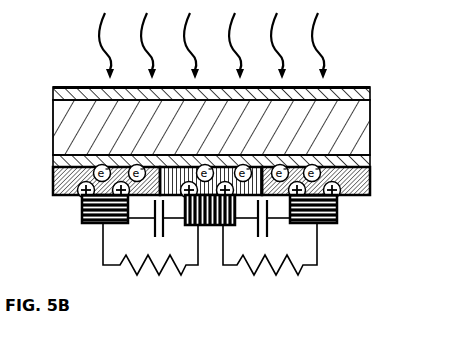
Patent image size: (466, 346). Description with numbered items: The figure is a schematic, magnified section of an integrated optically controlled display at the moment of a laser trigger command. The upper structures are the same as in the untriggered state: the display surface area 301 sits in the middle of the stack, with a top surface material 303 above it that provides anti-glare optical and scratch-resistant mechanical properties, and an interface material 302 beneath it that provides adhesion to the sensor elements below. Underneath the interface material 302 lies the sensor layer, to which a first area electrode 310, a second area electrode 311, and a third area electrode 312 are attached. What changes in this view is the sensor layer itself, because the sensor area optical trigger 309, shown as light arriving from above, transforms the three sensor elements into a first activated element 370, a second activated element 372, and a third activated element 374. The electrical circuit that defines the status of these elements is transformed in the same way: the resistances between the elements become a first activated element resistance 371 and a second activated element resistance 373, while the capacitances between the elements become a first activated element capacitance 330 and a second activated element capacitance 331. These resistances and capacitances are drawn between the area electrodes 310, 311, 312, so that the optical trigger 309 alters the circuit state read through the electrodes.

The sensor area optical trigger 309 is at (112, 58).
The top surface material 303 is at (55, 91).
The display surface area 301 is at (58, 128).
The interface material 302 is at (55, 162).
The first activated element 370 is at (66, 191).
The second activated element 372 is at (193, 180).
The third activated element 374 is at (352, 188).
The first area electrode 310 is at (92, 222).
The second area electrode 311 is at (216, 227).
The third area electrode 312 is at (323, 222).
The first activated element capacitance 330 is at (155, 224).
The second activated element capacitance 331 is at (260, 220).
The first activated element resistance 371 is at (158, 270).
The second activated element resistance 373 is at (263, 268).